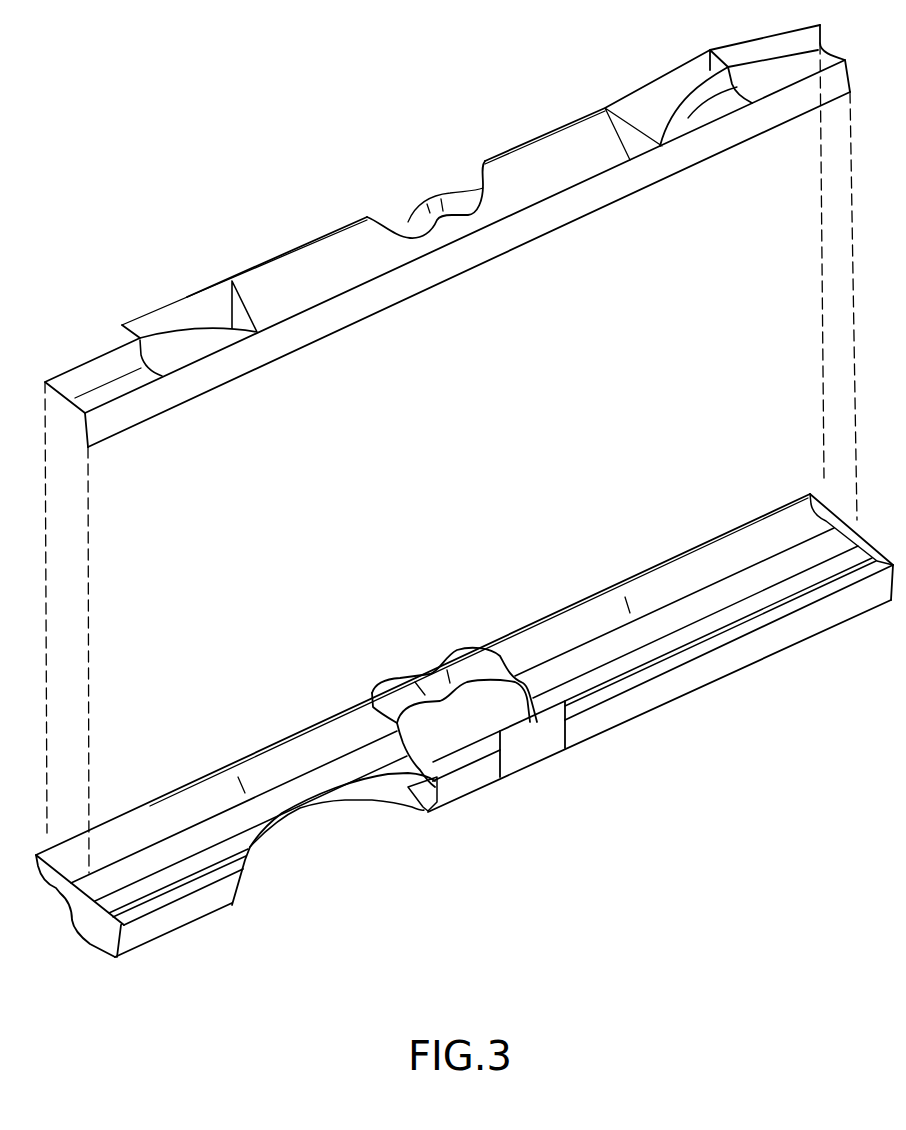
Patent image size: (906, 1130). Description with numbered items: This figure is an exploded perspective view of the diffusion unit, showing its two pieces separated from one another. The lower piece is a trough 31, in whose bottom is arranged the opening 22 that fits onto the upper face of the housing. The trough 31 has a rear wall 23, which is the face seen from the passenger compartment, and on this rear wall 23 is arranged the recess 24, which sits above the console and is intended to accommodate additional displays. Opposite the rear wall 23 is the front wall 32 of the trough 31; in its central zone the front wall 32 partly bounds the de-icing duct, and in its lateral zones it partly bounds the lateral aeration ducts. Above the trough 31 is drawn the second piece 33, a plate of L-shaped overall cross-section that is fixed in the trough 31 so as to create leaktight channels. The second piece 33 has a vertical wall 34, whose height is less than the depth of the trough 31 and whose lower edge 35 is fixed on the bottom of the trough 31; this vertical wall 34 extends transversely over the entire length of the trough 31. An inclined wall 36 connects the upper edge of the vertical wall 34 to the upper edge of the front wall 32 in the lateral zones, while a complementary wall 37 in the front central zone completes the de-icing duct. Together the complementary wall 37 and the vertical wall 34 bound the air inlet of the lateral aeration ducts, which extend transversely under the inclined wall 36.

The trough 31 is at (464, 675).
The front wall 32 is at (653, 590).
The rear wall 23 is at (697, 673).
The opening 22 is at (448, 743).
The recess 24 is at (530, 737).
The second piece 33 is at (451, 449).
The vertical wall 34 is at (122, 420).
The lower edge 35 is at (200, 398).
The inclined wall 36 is at (298, 277).
The complementary wall 37 is at (408, 222).